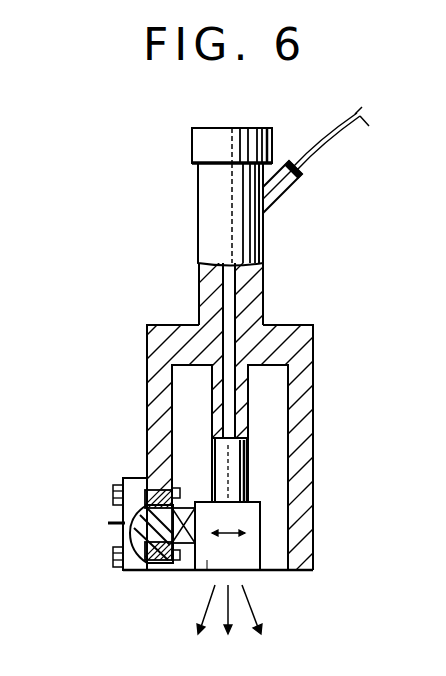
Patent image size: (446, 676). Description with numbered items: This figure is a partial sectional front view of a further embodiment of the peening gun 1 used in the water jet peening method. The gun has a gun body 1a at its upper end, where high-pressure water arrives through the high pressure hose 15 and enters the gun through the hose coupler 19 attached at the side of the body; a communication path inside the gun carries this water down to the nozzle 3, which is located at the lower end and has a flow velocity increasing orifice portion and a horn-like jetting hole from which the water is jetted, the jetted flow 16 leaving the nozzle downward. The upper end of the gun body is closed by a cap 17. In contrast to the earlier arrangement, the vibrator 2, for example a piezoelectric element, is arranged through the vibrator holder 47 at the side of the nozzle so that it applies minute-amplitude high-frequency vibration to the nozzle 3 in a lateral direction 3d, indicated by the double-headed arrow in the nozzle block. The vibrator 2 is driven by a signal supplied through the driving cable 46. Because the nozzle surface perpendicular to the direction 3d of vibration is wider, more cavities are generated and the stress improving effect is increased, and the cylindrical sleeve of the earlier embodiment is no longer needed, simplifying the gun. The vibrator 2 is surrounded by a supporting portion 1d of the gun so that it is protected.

The peening gun 1 is at (203, 210).
The gun body 1a is at (257, 283).
The supporting portion 1d is at (152, 440).
The vibrator 2 is at (179, 573).
The nozzle 3 is at (207, 562).
The lateral direction 3d is at (230, 523).
The high pressure hose 15 is at (353, 133).
The discharge flow 16 is at (248, 602).
The end cap 17 is at (191, 148).
The hose coupler 19 is at (280, 195).
The driving cable 46 is at (115, 523).
The vibrator holder 47 is at (143, 528).